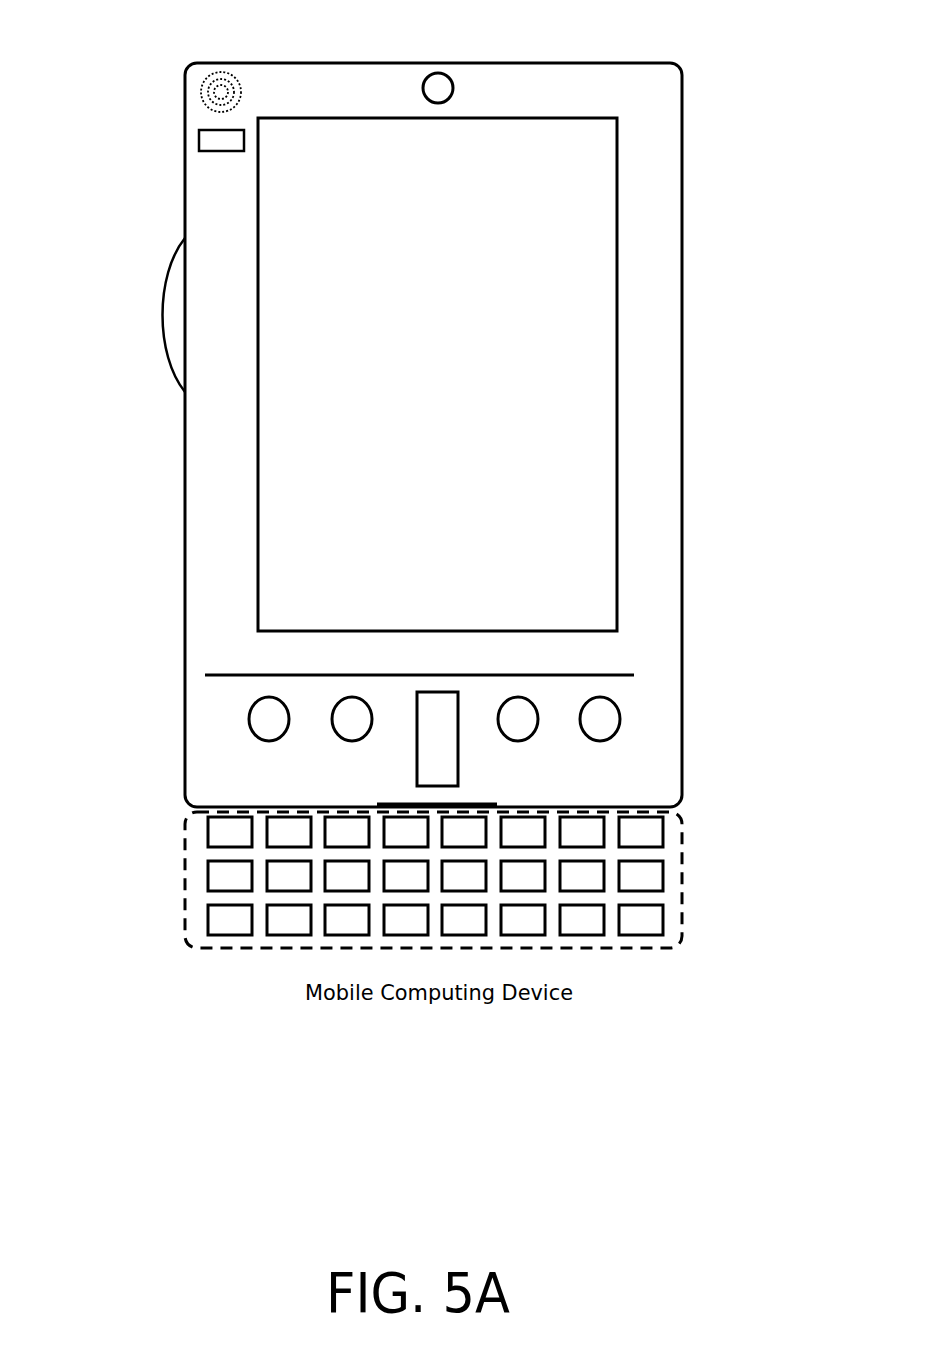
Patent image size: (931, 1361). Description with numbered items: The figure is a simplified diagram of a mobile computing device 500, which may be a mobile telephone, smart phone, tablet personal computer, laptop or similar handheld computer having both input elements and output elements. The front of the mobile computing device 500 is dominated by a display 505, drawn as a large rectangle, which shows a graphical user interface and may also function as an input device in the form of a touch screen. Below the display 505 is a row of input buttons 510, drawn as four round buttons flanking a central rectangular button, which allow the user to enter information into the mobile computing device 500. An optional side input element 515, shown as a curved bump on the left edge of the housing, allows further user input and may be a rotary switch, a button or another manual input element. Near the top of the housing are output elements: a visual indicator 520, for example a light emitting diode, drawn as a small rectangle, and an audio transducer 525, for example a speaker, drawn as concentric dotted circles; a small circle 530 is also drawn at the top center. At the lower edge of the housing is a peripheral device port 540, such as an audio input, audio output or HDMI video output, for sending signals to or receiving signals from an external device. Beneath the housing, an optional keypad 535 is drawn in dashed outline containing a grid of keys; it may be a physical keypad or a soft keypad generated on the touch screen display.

The mobile computing device 500 is at (683, 93).
The display 505 is at (287, 468).
The input buttons 510 is at (417, 747).
The side input element 515 is at (163, 299).
The visual indicator 520 is at (205, 137).
The audio transducer 525 is at (203, 84).
The camera 530 is at (432, 73).
The keypad 535 is at (197, 878).
The peripheral device port 540 is at (480, 804).